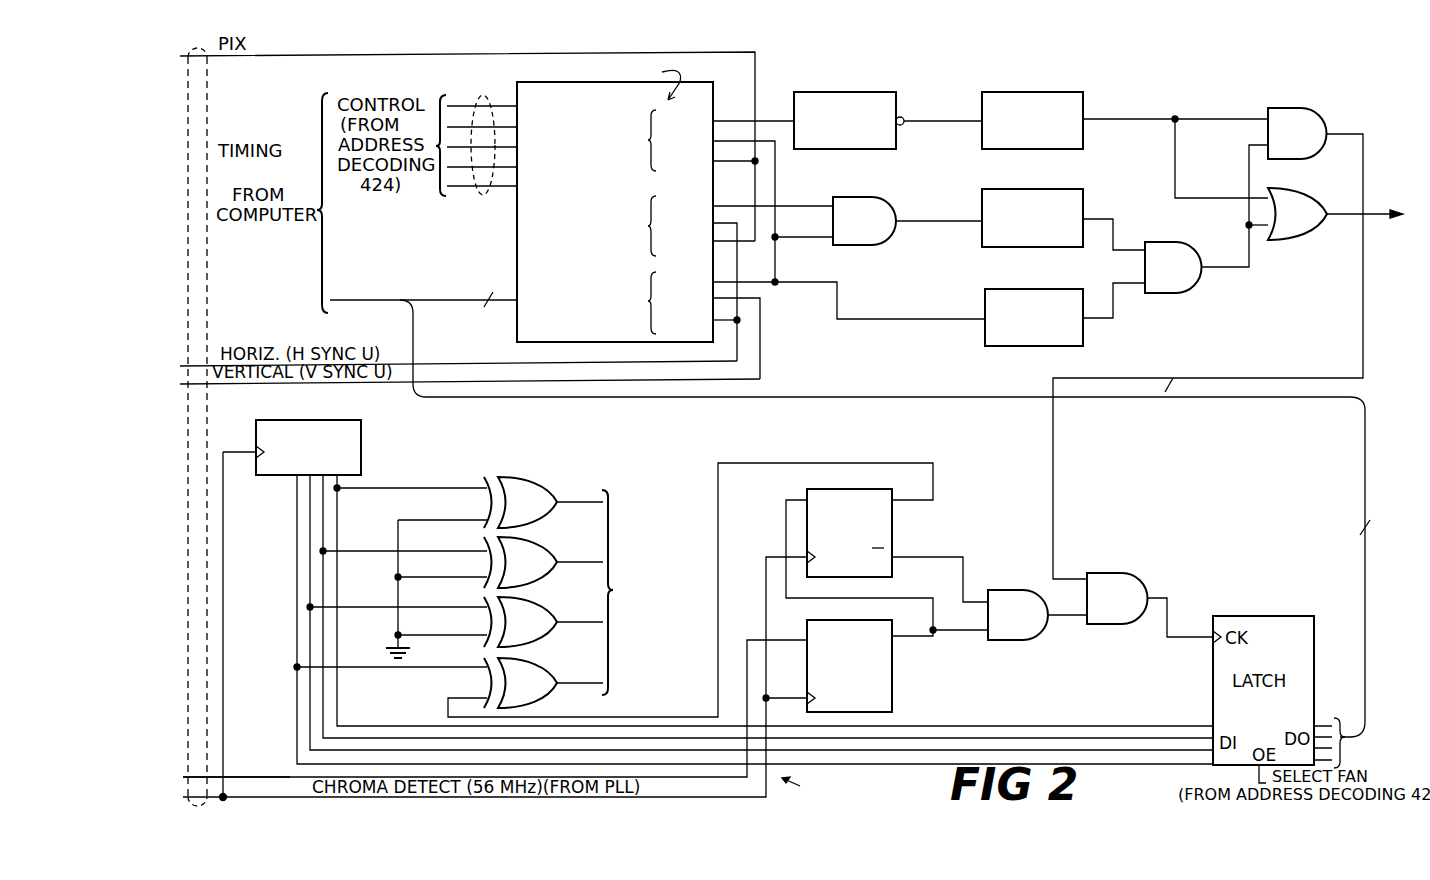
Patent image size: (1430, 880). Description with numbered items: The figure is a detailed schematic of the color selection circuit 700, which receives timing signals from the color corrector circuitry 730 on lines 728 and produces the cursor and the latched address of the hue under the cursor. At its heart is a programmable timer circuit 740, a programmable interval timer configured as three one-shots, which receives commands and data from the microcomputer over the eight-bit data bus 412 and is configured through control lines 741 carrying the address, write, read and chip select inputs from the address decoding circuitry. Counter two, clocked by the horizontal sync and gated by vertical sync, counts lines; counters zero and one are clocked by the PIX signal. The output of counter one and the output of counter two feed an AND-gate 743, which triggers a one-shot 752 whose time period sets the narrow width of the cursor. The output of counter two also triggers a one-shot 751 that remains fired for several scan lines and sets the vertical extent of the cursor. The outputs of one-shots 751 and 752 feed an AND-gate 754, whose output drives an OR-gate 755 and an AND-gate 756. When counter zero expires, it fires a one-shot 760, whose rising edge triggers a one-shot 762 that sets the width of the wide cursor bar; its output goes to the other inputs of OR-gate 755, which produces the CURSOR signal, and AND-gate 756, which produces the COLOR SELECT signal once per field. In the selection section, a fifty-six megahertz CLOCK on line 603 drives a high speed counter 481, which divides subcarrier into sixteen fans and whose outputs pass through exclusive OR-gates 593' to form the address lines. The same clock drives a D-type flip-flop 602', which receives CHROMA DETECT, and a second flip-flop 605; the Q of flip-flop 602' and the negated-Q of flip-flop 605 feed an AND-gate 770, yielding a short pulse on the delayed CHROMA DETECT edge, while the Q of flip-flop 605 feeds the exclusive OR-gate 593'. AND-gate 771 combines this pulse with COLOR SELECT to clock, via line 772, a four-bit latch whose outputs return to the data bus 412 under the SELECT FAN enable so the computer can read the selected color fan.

The lines 728 is at (224, 110).
The control lines 741 is at (490, 195).
The programmable timer circuit 740 is at (713, 114).
The data bus 412 is at (343, 301).
The one-shot 760 is at (825, 92).
The one-shot 762 is at (1012, 92).
The AND-gate 743 is at (878, 204).
The one-shot 752 is at (1083, 206).
The one-shot 751 is at (1012, 290).
The AND-gate 754 is at (1172, 248).
The AND-gate 756 is at (1271, 109).
The OR-gate 755 is at (1309, 198).
The high speed counter 481 is at (361, 456).
The exclusive OR-gate 593' is at (543, 597).
The color corrector circuitry 730 is at (663, 592).
The high speed D-type flip-flop 605 is at (892, 546).
The high speed D-type flip-flop 602' is at (873, 666).
The line 603 is at (291, 778).
The AND-gate 770 is at (988, 592).
The AND-gate 771 is at (1121, 573).
The line 772 is at (1168, 622).
The color selection circuit 700 is at (809, 789).